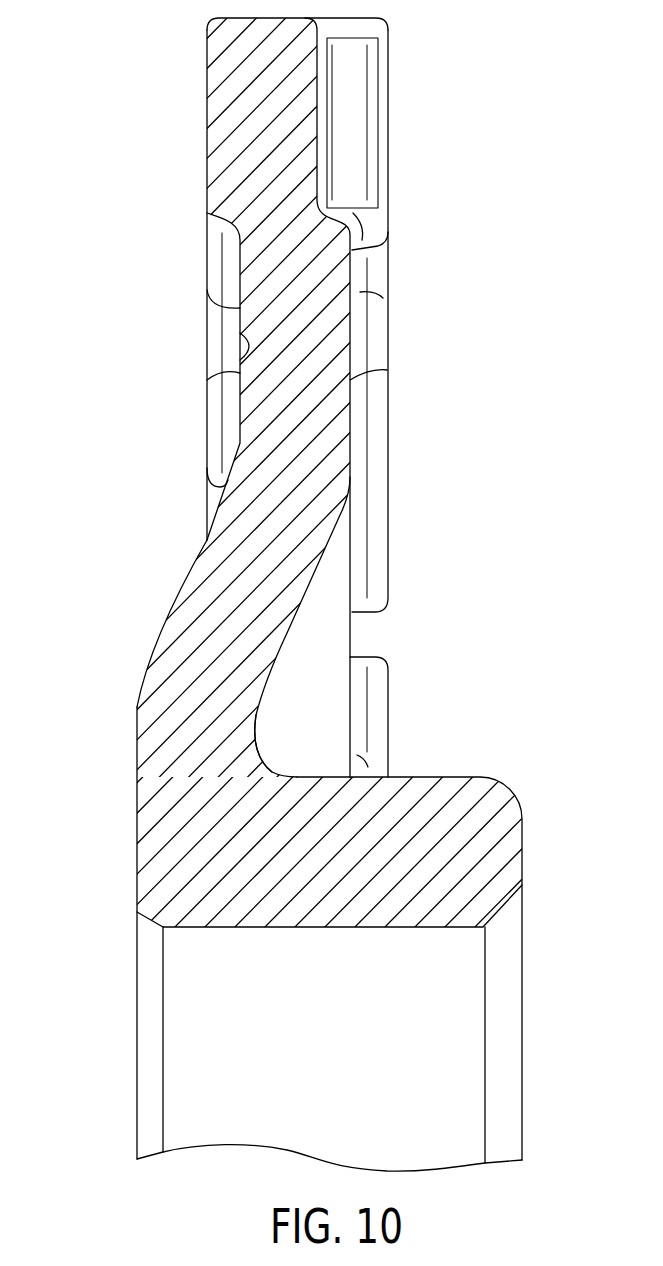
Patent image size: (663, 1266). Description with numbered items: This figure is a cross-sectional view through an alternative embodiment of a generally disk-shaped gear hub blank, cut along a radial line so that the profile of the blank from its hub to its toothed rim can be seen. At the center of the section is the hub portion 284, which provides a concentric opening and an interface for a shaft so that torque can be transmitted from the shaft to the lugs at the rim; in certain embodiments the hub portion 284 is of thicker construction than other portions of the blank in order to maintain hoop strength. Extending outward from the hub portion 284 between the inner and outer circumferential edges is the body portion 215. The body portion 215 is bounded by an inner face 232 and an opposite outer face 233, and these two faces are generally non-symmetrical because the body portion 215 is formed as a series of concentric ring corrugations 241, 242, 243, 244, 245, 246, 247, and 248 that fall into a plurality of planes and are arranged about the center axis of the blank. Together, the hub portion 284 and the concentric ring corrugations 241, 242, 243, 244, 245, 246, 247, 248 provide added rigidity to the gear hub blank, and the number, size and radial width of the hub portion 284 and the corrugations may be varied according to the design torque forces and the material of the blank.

The body portion 215 is at (176, 238).
The inner face 232 is at (350, 357).
The outer face 233 is at (206, 437).
The concentric ring corrugation 241 is at (137, 943).
The concentric ring corrugation 242 is at (137, 883).
The concentric ring corrugation 243 is at (135, 708).
The concentric ring corrugation 244 is at (153, 647).
The concentric ring corrugation 245 is at (247, 520).
The concentric ring corrugation 246 is at (250, 307).
The concentric ring corrugation 247 is at (270, 773).
The concentric ring corrugation 248 is at (287, 592).
The hub portion 284 is at (420, 800).